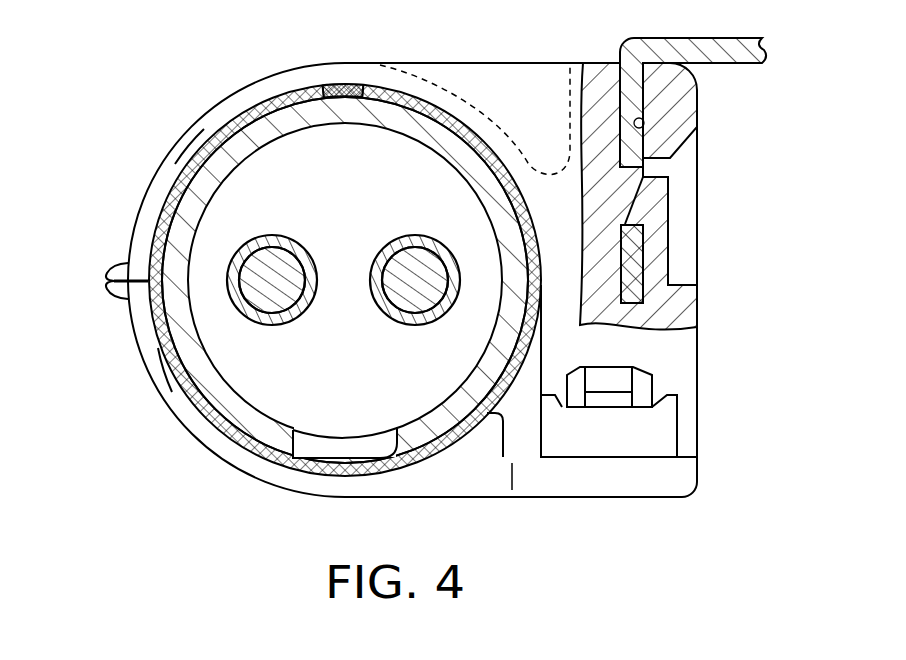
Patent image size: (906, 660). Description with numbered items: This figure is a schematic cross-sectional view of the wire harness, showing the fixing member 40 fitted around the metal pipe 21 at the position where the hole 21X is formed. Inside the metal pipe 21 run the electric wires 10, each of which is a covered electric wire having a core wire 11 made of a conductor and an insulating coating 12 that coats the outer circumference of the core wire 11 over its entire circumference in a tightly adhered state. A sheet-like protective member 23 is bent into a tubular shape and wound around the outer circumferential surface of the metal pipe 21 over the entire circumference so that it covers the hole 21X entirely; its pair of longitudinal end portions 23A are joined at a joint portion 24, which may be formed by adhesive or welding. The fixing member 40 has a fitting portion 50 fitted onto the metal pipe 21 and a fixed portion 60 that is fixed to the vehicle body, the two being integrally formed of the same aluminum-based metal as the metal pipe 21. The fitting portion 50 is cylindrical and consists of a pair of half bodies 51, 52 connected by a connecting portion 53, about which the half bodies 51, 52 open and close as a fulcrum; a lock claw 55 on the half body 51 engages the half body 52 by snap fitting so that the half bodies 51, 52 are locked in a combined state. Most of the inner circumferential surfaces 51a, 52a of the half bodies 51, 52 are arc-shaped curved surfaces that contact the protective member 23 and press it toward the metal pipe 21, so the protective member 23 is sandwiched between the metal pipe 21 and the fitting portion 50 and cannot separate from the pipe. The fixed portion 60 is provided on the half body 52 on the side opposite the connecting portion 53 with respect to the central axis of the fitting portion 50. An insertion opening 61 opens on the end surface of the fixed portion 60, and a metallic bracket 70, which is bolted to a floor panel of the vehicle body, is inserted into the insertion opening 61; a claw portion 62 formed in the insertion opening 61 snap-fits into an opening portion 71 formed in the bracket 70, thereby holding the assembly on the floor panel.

The fixing member 40 is at (213, 71).
The fitting portion 50 is at (58, 222).
The half body 51 is at (128, 325).
The half body 52 is at (128, 233).
The connecting portion 53 is at (103, 281).
The inner circumferential surface 51a is at (168, 362).
The inner circumferential surface 52a is at (195, 159).
The protective member 23 is at (480, 137).
The end portions 23A is at (340, 85).
The joint portion 24 is at (356, 90).
The metal pipe 21 is at (425, 424).
The hole 21X is at (379, 477).
The electric wire 10 is at (272, 236).
The core wire 11 is at (405, 254).
The insulating coating 12 is at (434, 244).
The fixed portion 60 is at (690, 84).
The insertion opening 61 is at (690, 135).
The claw portion 62 is at (643, 194).
The opening portion 71 is at (646, 222).
The bracket 70 is at (728, 38).
The lock claw 55 is at (653, 380).